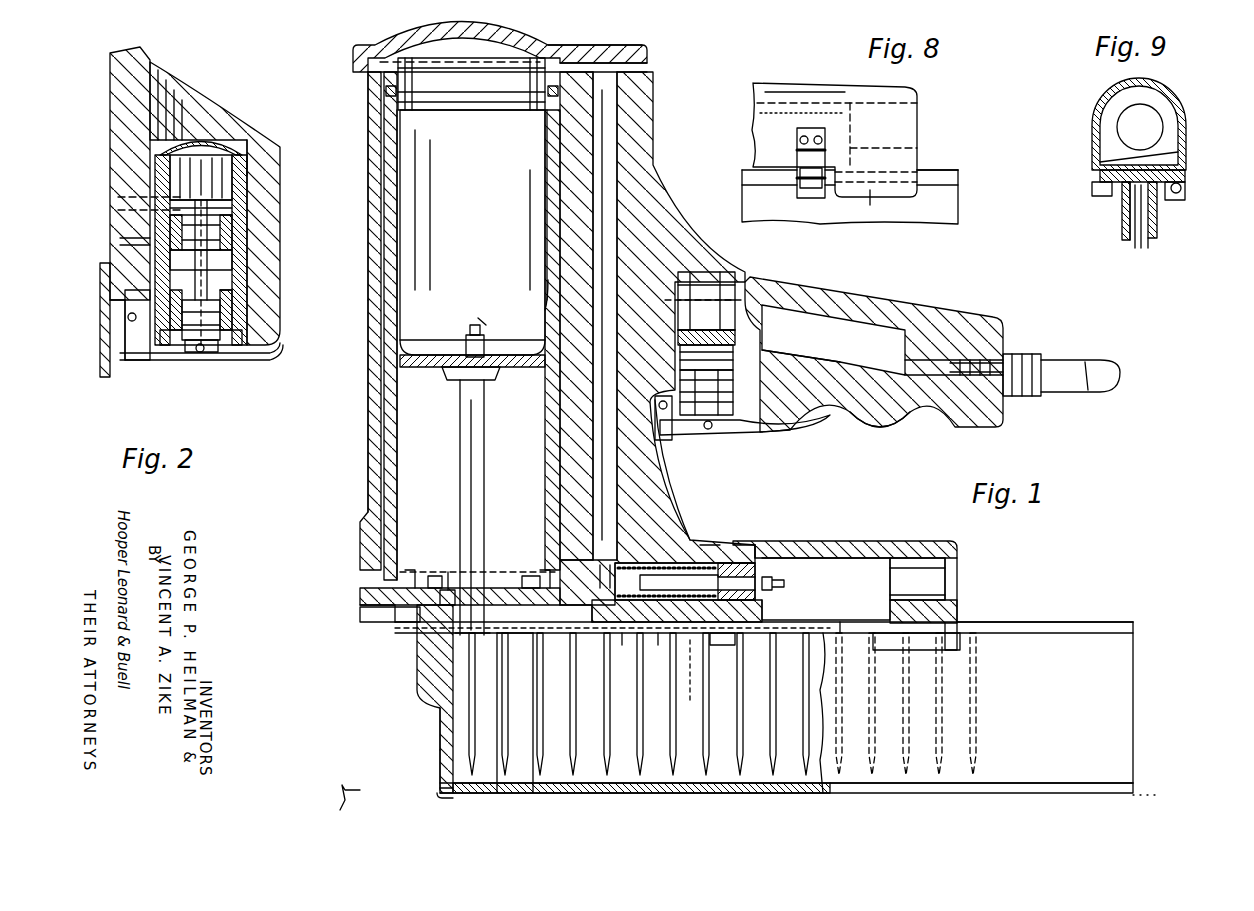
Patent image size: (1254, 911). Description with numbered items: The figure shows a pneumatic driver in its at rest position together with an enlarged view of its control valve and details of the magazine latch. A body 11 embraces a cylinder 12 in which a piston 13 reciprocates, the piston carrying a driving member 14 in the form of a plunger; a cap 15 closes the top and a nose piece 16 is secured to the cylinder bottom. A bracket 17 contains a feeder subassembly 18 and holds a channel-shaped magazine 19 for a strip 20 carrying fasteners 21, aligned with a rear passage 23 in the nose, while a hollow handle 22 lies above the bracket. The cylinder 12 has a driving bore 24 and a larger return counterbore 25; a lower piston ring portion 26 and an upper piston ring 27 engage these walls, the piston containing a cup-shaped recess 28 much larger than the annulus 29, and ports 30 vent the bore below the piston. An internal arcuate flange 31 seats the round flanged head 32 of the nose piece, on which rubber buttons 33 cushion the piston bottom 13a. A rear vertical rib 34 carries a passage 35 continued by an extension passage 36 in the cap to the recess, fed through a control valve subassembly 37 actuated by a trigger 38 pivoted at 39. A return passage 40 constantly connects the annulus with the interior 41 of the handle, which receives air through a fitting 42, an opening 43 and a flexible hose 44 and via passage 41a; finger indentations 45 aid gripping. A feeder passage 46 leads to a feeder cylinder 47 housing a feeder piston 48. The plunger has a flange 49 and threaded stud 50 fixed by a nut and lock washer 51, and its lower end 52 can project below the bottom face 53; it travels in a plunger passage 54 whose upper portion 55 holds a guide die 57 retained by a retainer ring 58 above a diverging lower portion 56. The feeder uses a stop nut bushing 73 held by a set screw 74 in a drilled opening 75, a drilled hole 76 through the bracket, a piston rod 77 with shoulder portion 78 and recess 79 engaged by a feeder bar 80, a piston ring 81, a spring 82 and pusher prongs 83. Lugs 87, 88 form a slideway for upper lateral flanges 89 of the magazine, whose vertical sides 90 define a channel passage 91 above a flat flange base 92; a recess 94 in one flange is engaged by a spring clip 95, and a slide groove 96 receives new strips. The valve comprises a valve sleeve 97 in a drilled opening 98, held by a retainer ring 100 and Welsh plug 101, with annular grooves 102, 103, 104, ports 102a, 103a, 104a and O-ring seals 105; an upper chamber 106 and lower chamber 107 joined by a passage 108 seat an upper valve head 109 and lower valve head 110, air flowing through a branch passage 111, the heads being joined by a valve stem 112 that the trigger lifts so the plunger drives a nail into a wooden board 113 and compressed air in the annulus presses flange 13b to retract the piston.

In FIG. 1, the body 11 is at (668, 498).
In FIG. 2, the body 11 is at (125, 118).
In FIG. 1, the cylinder 12 is at (375, 477).
In FIG. 1, the piston 13 is at (393, 372).
In FIG. 1, the bottom of piston 13a is at (395, 400).
In FIG. 1, the flange of piston 13b is at (547, 140).
In FIG. 1, the driving member 14 is at (466, 446).
In FIG. 1, the cap 15 is at (388, 48).
In FIG. 1, the nose piece 16 is at (418, 692).
In FIG. 1, the bracket 17 is at (735, 545).
In FIG. 8, the bracket 17 is at (770, 83).
In FIG. 9, the bracket 17 is at (1175, 90).
In FIG. 1, the feeder subassembly 18 is at (790, 545).
In FIG. 1, the magazine 19 is at (1118, 660).
In FIG. 8, the magazine 19 is at (950, 200).
In FIG. 9, the magazine 19 is at (1122, 205).
In FIG. 1, the strip 20 is at (818, 625).
In FIG. 1, the fasteners 21 is at (675, 760).
In FIG. 1, the handle 22 is at (895, 305).
In FIG. 1, the rear passage 23 is at (512, 788).
In FIG. 1, the driving bore 24 is at (381, 441).
In FIG. 1, the return counterbore 25 is at (381, 148).
In FIG. 2, the return counterbore 25 is at (282, 148).
In FIG. 1, the lower piston ring portion 26 is at (415, 330).
In FIG. 1, the upper piston ring 27 is at (400, 88).
In FIG. 1, the cup-shaped recess 28 is at (472, 232).
In FIG. 1, the annulus 29 is at (385, 183).
In FIG. 1, the ports 30 is at (490, 576).
In FIG. 1, the internal arcuate flange 31 is at (390, 615).
In FIG. 1, the round flanged head 32 is at (378, 594).
In FIG. 1, the rubber buttons 33 is at (536, 576).
In FIG. 1, the rear vertical rib 34 is at (640, 470).
In FIG. 1, the passage 35 is at (608, 90).
In FIG. 1, the extension passage 36 is at (578, 52).
In FIG. 1, the control valve subassembly 37 is at (705, 270).
In FIG. 2, the control valve subassembly 37 is at (245, 325).
In FIG. 1, the trigger 38 is at (790, 420).
In FIG. 2, the trigger 38 is at (168, 362).
In FIG. 1, the pivot 39 is at (663, 412).
In FIG. 2, the pivot 39 is at (127, 317).
In FIG. 1, the return passage 40 is at (548, 290).
In FIG. 2, the return passage 40 is at (118, 198).
In FIG. 1, the interior of handle 41 is at (820, 349).
In FIG. 1, the passage 41a is at (745, 276).
In FIG. 2, the passage 41a is at (250, 178).
In FIG. 1, the fitting 42 is at (1028, 396).
In FIG. 1, the opening 43 is at (950, 367).
In FIG. 1, the flexible hose 44 is at (1072, 363).
In FIG. 1, the finger indentations 45 is at (882, 405).
In FIG. 1, the feeder passage 46 is at (600, 485).
In FIG. 1, the feeder cylinder 47 is at (700, 545).
In FIG. 1, the feeder piston 48 is at (600, 570).
In FIG. 1, the flange 49 is at (496, 376).
In FIG. 1, the threaded stud 50 is at (484, 312).
In FIG. 1, the nut and lock washer 51 is at (484, 346).
In FIG. 1, the lower end of plunger 52 is at (420, 640).
In FIG. 1, the bottom face 53 is at (438, 790).
In FIG. 1, the plunger passage 54 is at (450, 714).
In FIG. 1, the upper portion 55 is at (455, 580).
In FIG. 1, the lower portion 56 is at (450, 752).
In FIG. 1, the guide die 57 is at (420, 626).
In FIG. 1, the retainer ring 58 is at (452, 585).
In FIG. 1, the stop nut bushing 73 is at (760, 605).
In FIG. 1, the set screw 74 is at (752, 545).
In FIG. 1, the drilled opening 75 is at (722, 648).
In FIG. 1, the drilled hole 76 is at (950, 570).
In FIG. 8, the drilled hole 76 is at (900, 112).
In FIG. 9, the drilled hole 76 is at (1118, 100).
In FIG. 1, the piston rod 77 is at (786, 571).
In FIG. 1, the shoulder portion 78 is at (680, 582).
In FIG. 1, the circumferential recess 79 is at (775, 588).
In FIG. 1, the feeder bar 80 is at (619, 646).
In FIG. 1, the piston ring 81 is at (605, 565).
In FIG. 1, the spring 82 is at (658, 640).
In FIG. 1, the pusher prongs 83 is at (470, 633).
In FIG. 1, the lugs 87 is at (690, 655).
In FIG. 1, the lugs 88 is at (960, 645).
In FIG. 8, the lugs 88 is at (880, 197).
In FIG. 9, the lugs 88 is at (1100, 190).
In FIG. 1, the upper lateral flanges 89 is at (1050, 633).
In FIG. 8, the upper lateral flanges 89 is at (940, 176).
In FIG. 9, the upper lateral flanges 89 is at (1100, 172).
In FIG. 1, the vertical sides 90 is at (1118, 700).
In FIG. 9, the vertical sides 90 is at (1122, 230).
In FIG. 1, the channel passage 91 is at (770, 790).
In FIG. 9, the channel passage 91 is at (1133, 240).
In FIG. 1, the flat flange base 92 is at (1040, 790).
In FIG. 8, the recess 94 is at (797, 158).
In FIG. 9, the recess 94 is at (1092, 140).
In FIG. 8, the spring clip 95 is at (800, 190).
In FIG. 9, the spring clip 95 is at (1183, 188).
In FIG. 9, the slide groove 96 is at (1150, 240).
In FIG. 2, the valve sleeve 97 is at (250, 168).
In FIG. 2, the drilled opening 98 is at (190, 142).
In FIG. 2, the retainer ring 100 is at (240, 355).
In FIG. 2, the Welsh plug 101 is at (210, 150).
In FIG. 1, the annular groove 102 is at (745, 318).
In FIG. 2, the annular groove 102 is at (250, 188).
In FIG. 2, the ports 102a is at (250, 200).
In FIG. 1, the annular groove 103 is at (745, 345).
In FIG. 2, the annular groove 103 is at (230, 245).
In FIG. 2, the ports 103a is at (245, 262).
In FIG. 1, the annular groove 104 is at (740, 395).
In FIG. 2, the annular groove 104 is at (245, 300).
In FIG. 2, the ports 104a is at (245, 312).
In FIG. 2, the O-ring seals 105 is at (245, 228).
In FIG. 2, the upper chamber 106 is at (225, 160).
In FIG. 2, the lower chamber 107 is at (165, 292).
In FIG. 2, the passage 108 is at (245, 276).
In FIG. 2, the upper valve head 109 is at (270, 150).
In FIG. 2, the lower valve head 110 is at (188, 355).
In FIG. 2, the branch passage 111 is at (120, 242).
In FIG. 1, the valve stem 112 is at (710, 430).
In FIG. 2, the valve stem 112 is at (210, 362).
In FIG. 1, the wooden board 113 is at (352, 788).